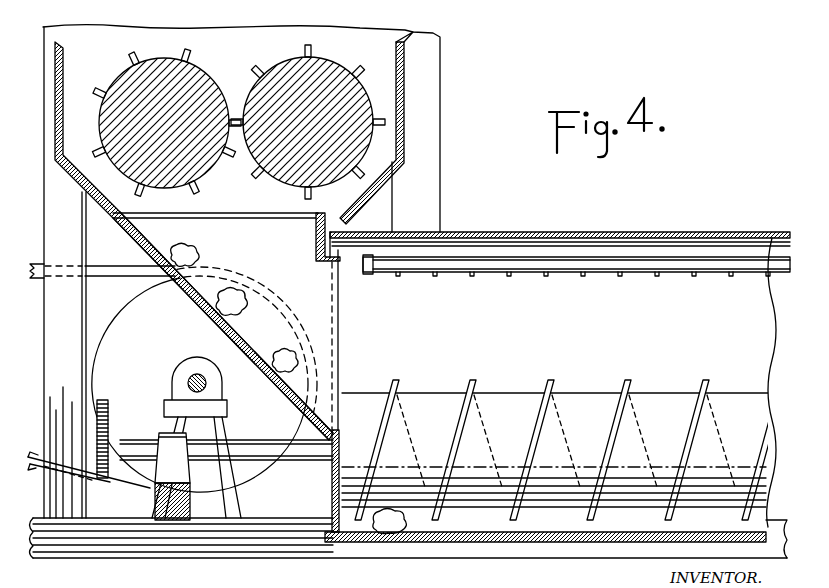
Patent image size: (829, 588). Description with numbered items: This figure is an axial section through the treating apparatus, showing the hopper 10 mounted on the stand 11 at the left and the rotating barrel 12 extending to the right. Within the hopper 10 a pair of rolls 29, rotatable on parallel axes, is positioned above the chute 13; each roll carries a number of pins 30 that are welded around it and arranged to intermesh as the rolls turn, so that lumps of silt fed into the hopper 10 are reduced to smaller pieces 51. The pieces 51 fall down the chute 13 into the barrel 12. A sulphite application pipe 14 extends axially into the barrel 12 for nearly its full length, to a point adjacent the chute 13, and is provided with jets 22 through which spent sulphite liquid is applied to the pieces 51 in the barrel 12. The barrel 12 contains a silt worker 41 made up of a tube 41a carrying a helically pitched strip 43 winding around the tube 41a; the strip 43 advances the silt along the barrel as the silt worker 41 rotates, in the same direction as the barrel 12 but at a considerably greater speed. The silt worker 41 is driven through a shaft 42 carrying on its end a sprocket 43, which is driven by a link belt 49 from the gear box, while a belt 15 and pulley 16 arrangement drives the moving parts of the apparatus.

The hopper 10 is at (405, 82).
The stand 11 is at (438, 151).
The rotating barrel 12 is at (507, 232).
The chute 13 is at (142, 243).
The sulphite application pipe 14 is at (680, 260).
The belt 15 is at (128, 480).
The pulley 16 is at (134, 314).
The jets 22 is at (511, 274).
The rolls 29 is at (271, 176).
The pins 30 is at (255, 68).
The silt worker 41 is at (442, 405).
The tube 41a is at (590, 404).
The shaft 42 is at (304, 463).
The helically pitched strip 43 is at (632, 384).
The link belt 49 is at (104, 400).
The pieces 51 is at (240, 300).